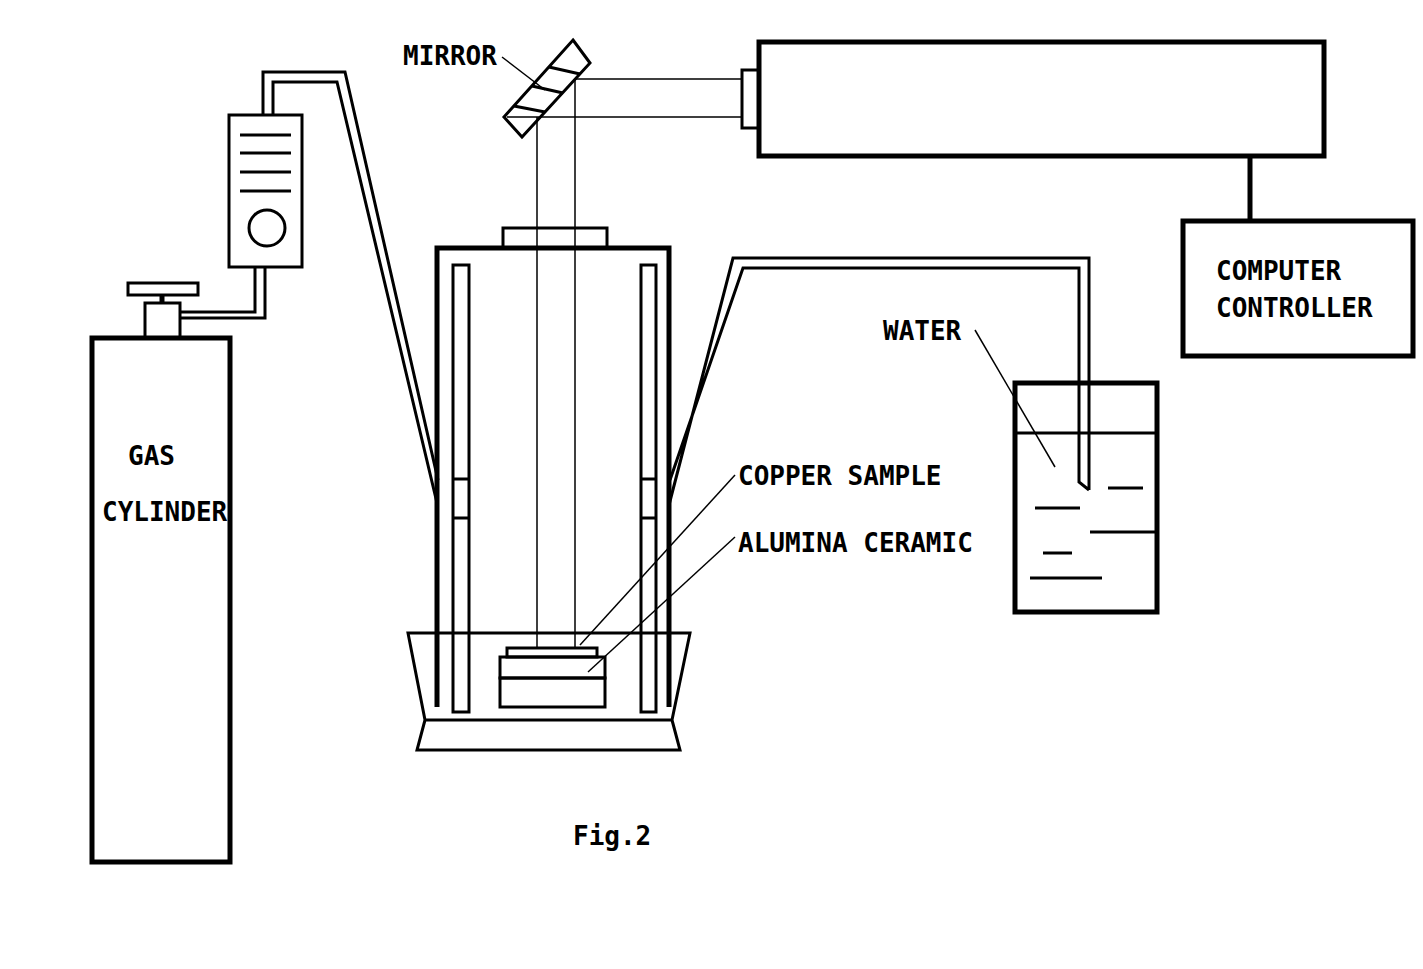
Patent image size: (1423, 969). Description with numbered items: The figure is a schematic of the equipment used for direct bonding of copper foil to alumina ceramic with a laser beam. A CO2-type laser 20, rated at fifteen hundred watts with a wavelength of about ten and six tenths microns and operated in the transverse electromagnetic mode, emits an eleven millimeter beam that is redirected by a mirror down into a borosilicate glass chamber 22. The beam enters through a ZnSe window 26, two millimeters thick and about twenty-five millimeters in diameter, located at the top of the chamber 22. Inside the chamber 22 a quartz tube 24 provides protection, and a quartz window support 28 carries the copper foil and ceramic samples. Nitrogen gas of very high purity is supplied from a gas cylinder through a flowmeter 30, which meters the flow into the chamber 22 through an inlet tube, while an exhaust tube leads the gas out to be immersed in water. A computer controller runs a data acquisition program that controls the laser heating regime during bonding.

The laser 20 is at (1033, 99).
The borosilicate glass chamber 22 is at (673, 643).
The quartz tube 24 is at (645, 466).
The ZnSe window 26 is at (580, 240).
The quartz window support 28 is at (572, 695).
The flowmeter 30 is at (287, 250).